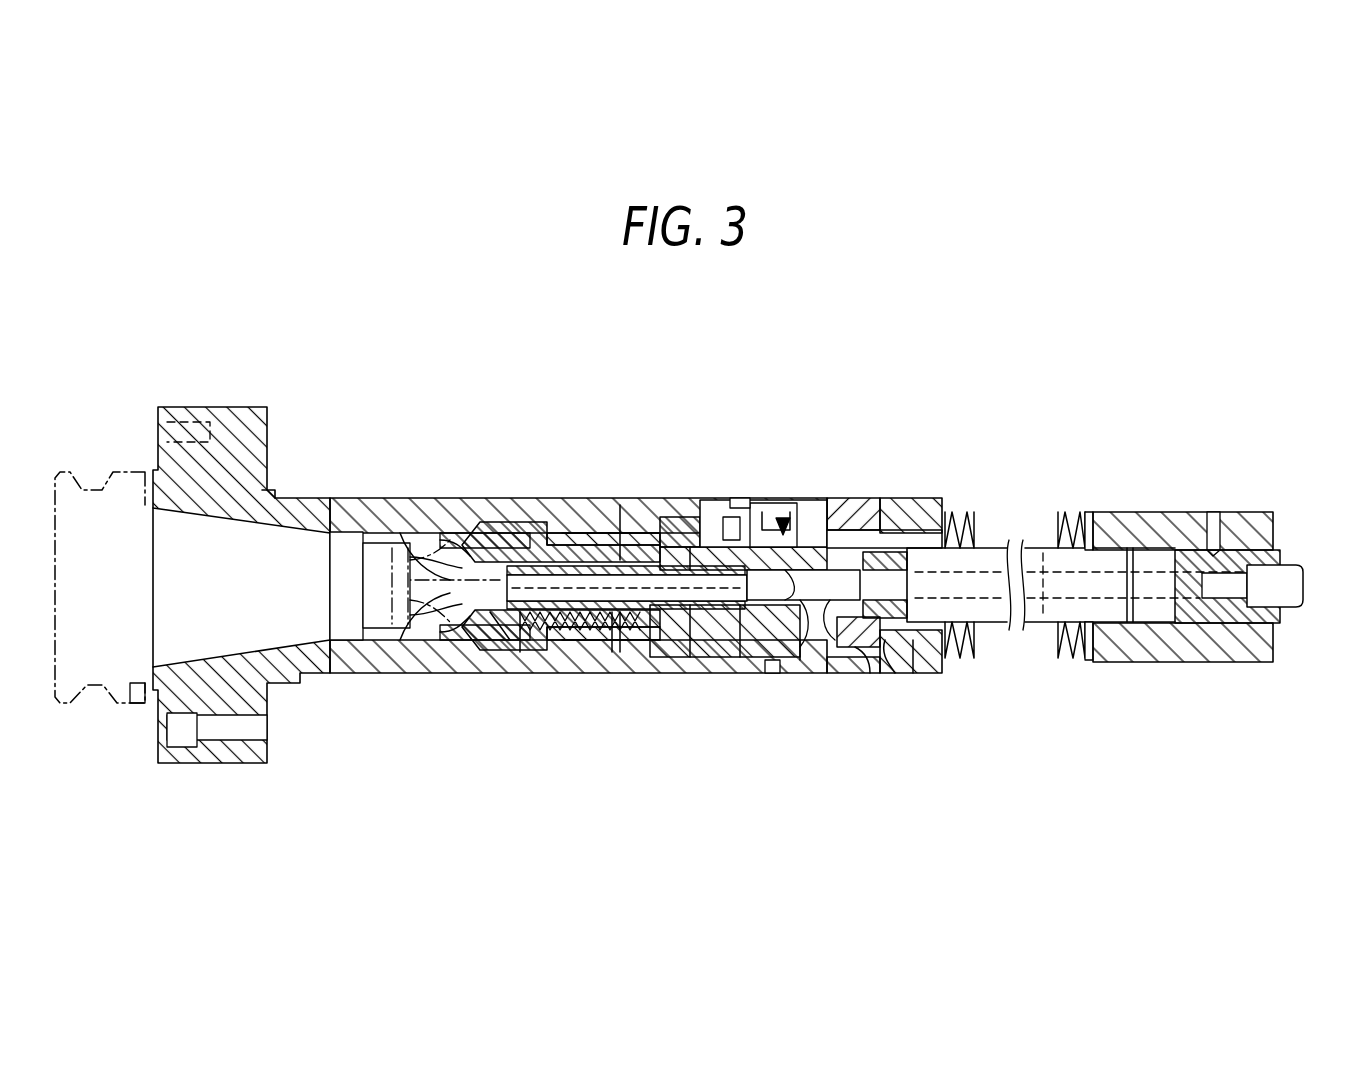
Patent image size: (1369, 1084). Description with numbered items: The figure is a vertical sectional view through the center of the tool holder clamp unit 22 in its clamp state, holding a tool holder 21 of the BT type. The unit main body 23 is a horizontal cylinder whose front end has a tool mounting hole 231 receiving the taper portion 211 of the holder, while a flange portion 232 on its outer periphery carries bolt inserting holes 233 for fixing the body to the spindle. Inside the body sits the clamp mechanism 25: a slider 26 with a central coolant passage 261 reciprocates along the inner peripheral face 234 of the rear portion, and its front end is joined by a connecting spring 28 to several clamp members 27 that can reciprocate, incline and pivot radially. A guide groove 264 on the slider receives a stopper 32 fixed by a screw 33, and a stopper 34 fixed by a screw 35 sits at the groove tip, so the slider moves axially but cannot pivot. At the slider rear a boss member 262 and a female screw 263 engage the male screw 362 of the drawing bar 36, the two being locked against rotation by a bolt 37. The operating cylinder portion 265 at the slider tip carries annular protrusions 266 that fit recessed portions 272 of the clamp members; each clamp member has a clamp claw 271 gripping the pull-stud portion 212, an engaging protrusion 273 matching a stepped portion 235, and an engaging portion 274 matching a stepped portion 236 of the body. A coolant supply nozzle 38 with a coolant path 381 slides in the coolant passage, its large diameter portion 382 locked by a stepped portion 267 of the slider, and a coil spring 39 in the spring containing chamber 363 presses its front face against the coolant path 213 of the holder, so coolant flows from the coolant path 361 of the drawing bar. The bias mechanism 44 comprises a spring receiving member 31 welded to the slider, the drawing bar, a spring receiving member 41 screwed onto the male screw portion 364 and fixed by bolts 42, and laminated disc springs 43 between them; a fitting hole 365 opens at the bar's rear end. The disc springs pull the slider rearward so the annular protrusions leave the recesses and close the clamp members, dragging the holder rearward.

The tool holder 21 is at (63, 470).
The tool holder clamp unit 22 is at (774, 350).
The unit main body 23 is at (498, 510).
The clamp mechanism 25 is at (835, 393).
The slider 26 is at (828, 675).
The clamp member 27 is at (578, 510).
The connecting spring 28 is at (653, 500).
The spring receiving member 31 is at (930, 500).
The stopper 32 is at (773, 500).
The screw 33 is at (740, 500).
The stopper 34 is at (707, 500).
The screw 35 is at (692, 500).
The drawing bar 36 is at (992, 547).
The bolt 37 is at (877, 500).
The coolant supply nozzle 38 is at (542, 512).
The coil spring 39 is at (802, 675).
The spring receiving member 41 is at (1160, 513).
The bolt 42 is at (1213, 515).
The disc spring 43 is at (1087, 513).
The bias mechanism 44 is at (1273, 393).
The taper portion 211 is at (293, 687).
The pull-stud portion 212 is at (497, 677).
The coolant path 213 is at (360, 579).
The tool mounting hole 231 is at (273, 495).
The flange portion 232 is at (248, 418).
The bolt inserting hole 233 is at (225, 735).
The inner peripheral face 234 is at (785, 675).
The stepped portion 235 is at (455, 510).
The stepped portion 236 is at (600, 513).
The coolant passage 261 is at (828, 500).
The boss member 262 is at (938, 675).
The female screw 263 is at (975, 648).
The guide groove 264 is at (783, 518).
The operating cylinder portion 265 is at (590, 675).
The annular protrusion 266 is at (563, 675).
The stepped portion 267 is at (697, 675).
The clamp claw 271 is at (405, 530).
The recessed portion 272 is at (525, 673).
The engaging protrusion 273 is at (433, 670).
The engaging portion 274 is at (623, 500).
The coolant path 361 is at (1043, 577).
The male screw 362 is at (893, 675).
The spring containing chamber 363 is at (857, 675).
The male screw portion 364 is at (1243, 664).
The fitting hole 365 is at (1303, 577).
The coolant path 381 is at (448, 622).
The large diameter portion 382 is at (742, 675).